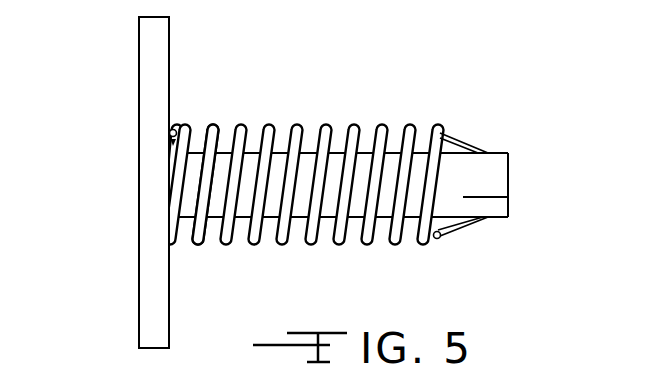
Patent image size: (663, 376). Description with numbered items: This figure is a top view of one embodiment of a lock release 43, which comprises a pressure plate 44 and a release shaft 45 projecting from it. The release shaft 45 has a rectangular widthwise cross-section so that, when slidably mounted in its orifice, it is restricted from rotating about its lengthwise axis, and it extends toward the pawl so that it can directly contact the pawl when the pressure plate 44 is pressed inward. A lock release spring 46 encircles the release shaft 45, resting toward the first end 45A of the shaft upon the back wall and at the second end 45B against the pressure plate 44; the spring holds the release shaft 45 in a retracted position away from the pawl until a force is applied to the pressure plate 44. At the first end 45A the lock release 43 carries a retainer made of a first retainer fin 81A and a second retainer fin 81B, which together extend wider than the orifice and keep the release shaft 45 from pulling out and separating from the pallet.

The lock release 43 is at (366, 99).
The pressure plate 44 is at (138, 155).
The release shaft 45 is at (508, 197).
The first end of the release shaft 45A is at (508, 178).
The second end of the release shaft 45B is at (176, 138).
The lock release spring 46 is at (200, 242).
The first retainer fin 81A is at (471, 132).
The second retainer fin 81B is at (465, 228).